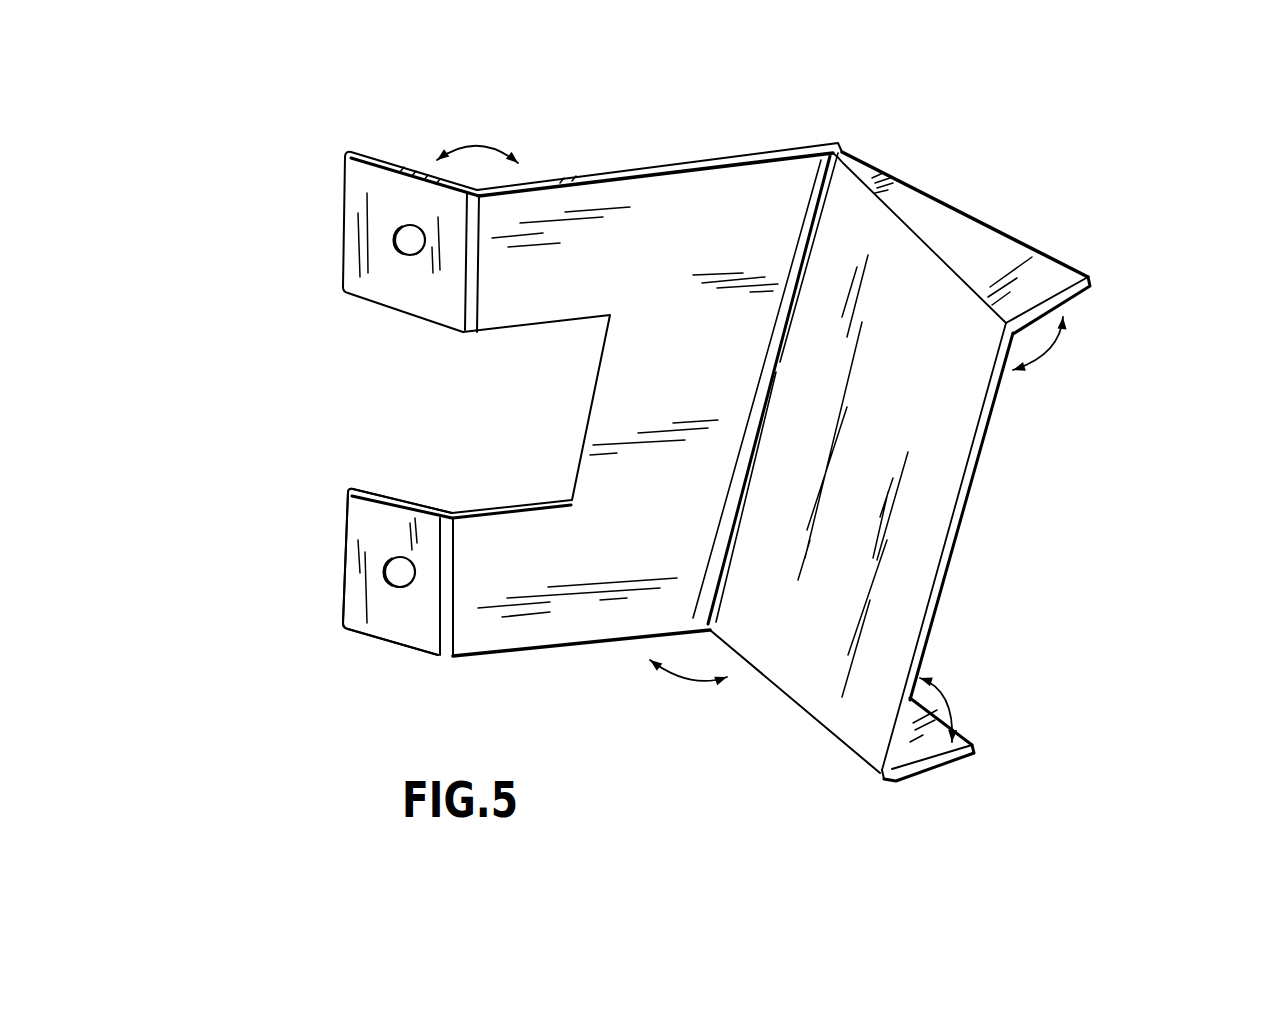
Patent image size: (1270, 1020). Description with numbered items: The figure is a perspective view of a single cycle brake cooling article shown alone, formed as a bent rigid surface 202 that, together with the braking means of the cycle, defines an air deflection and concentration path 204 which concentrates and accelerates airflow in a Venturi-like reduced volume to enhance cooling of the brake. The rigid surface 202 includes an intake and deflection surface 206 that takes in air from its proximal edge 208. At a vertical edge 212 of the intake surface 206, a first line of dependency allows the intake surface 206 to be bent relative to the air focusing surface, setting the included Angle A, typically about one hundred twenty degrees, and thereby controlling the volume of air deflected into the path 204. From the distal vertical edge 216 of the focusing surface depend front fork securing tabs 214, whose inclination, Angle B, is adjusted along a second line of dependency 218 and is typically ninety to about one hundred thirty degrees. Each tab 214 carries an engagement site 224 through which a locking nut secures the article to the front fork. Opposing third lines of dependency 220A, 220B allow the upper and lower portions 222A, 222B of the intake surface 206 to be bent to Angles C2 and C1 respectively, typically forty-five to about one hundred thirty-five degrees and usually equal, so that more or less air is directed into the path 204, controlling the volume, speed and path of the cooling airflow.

The rigid surface 202 is at (547, 630).
The air deflection and concentration path 204 is at (1062, 539).
The intake and deflection surface 206 is at (547, 630).
The proximal edge 208 is at (1000, 410).
The vertical edge 212 is at (803, 220).
The front fork securing portion 214 is at (377, 612).
The distal vertical edge 216 is at (377, 612).
The second line of dependency 218 is at (478, 193).
The third line of dependency 220A is at (902, 218).
The third line of dependency 220B is at (820, 727).
The upper portion 222A is at (1043, 250).
The lower portion 222B is at (918, 777).
The engagement sites 224 is at (407, 235).
The Angle A is at (688, 690).
The Angle B is at (477, 140).
The Angle C1 is at (963, 710).
The Angle C2 is at (1066, 344).